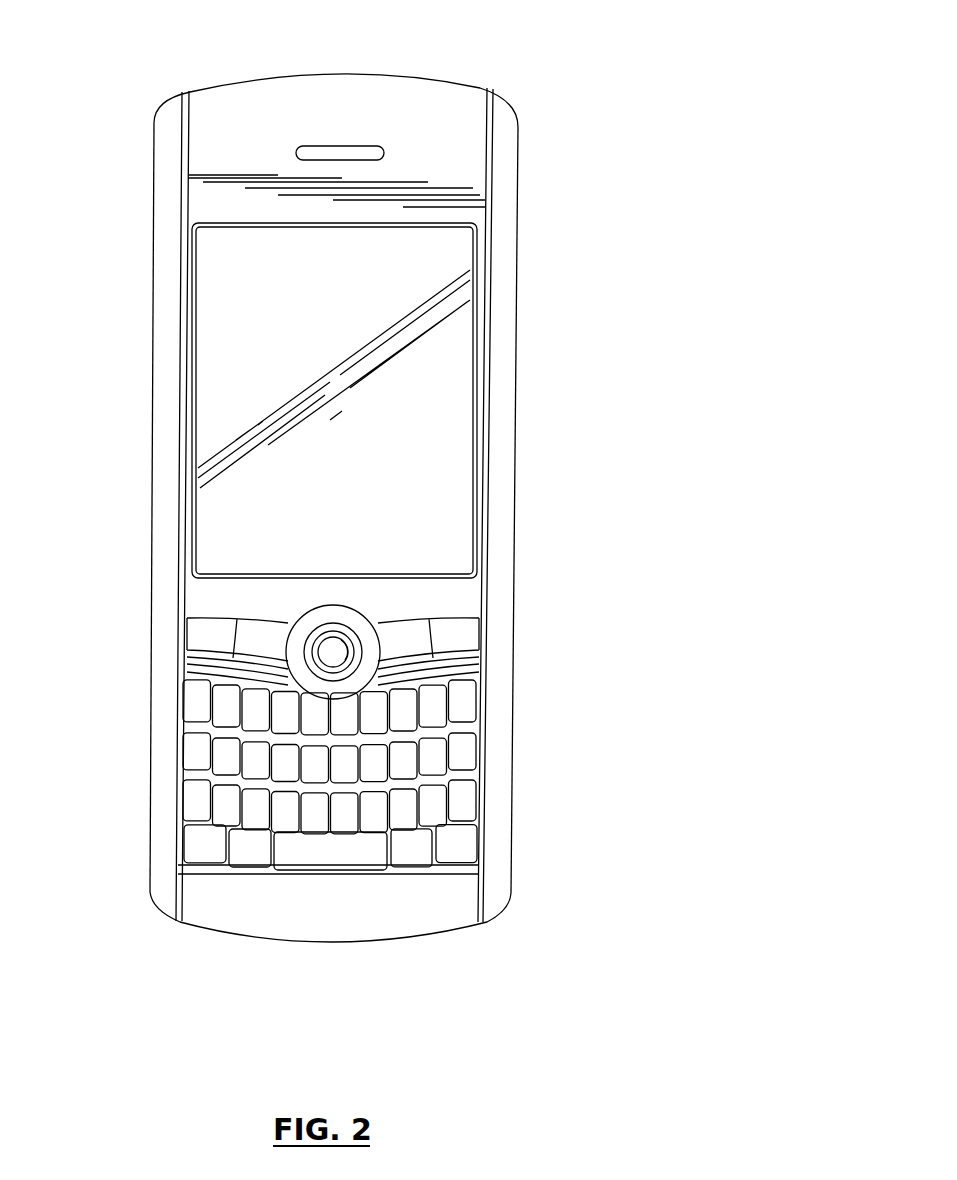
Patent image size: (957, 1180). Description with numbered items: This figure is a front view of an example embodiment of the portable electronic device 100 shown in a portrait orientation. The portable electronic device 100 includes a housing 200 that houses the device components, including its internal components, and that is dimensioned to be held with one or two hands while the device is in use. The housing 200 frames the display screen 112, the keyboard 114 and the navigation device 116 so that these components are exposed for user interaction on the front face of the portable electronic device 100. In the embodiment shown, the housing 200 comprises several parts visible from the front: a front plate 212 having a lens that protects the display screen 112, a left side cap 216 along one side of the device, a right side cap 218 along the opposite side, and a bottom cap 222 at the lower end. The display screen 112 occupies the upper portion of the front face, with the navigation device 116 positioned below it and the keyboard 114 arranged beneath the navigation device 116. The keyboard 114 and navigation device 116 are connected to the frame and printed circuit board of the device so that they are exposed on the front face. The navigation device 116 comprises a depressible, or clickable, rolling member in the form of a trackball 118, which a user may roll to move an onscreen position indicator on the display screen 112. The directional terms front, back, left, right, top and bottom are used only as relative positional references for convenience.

The portable electronic device 100 is at (352, 533).
The display screen 112 is at (443, 358).
The keyboard 114 is at (483, 792).
The navigation device 116 is at (415, 606).
The trackball 118 is at (338, 642).
The housing 200 is at (352, 533).
The front plate 212 is at (463, 132).
The left side cap 216 is at (147, 768).
The right side cap 218 is at (516, 774).
The bottom cap 222 is at (368, 943).